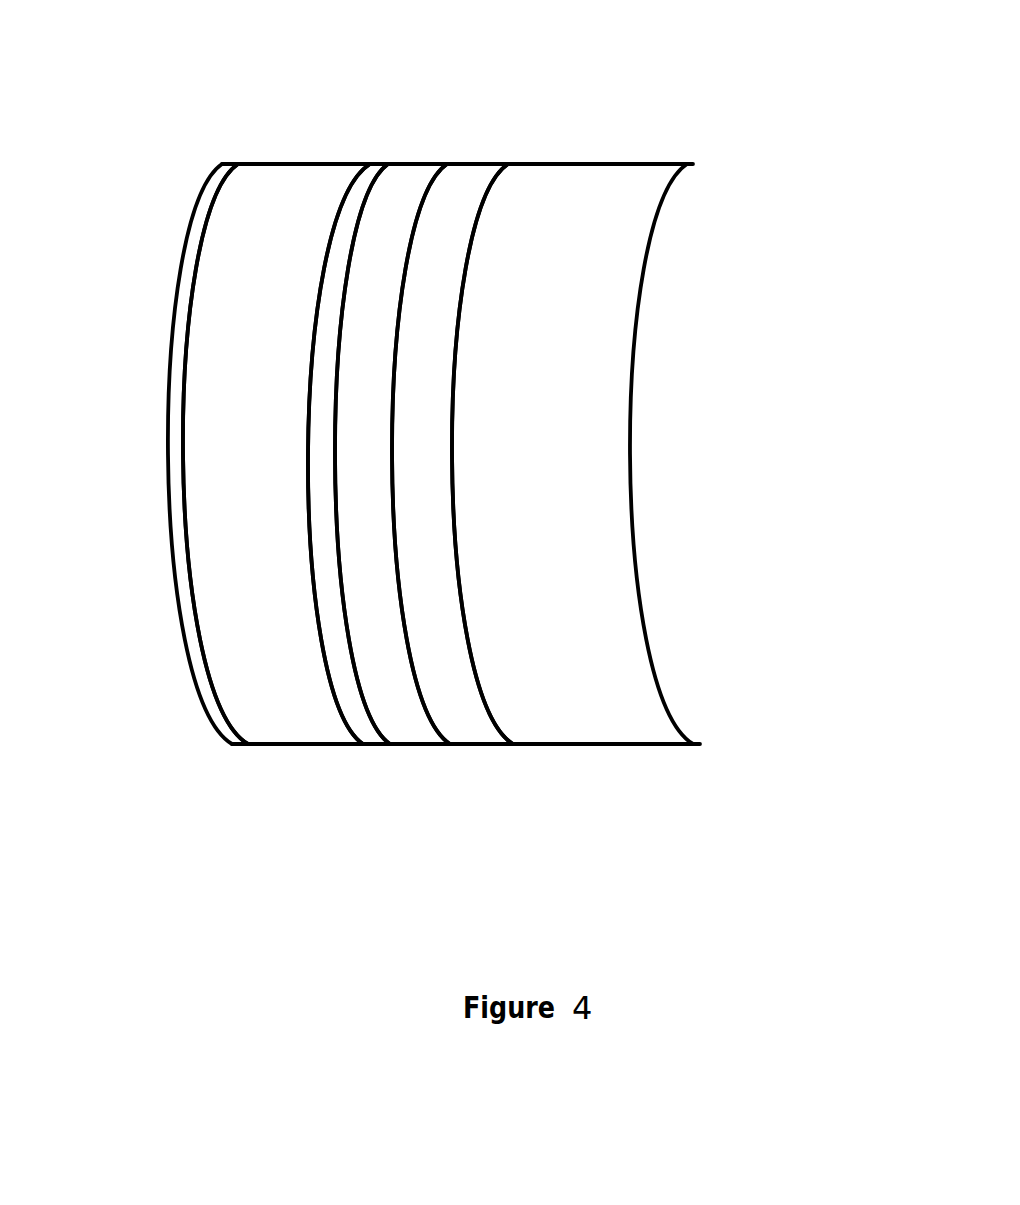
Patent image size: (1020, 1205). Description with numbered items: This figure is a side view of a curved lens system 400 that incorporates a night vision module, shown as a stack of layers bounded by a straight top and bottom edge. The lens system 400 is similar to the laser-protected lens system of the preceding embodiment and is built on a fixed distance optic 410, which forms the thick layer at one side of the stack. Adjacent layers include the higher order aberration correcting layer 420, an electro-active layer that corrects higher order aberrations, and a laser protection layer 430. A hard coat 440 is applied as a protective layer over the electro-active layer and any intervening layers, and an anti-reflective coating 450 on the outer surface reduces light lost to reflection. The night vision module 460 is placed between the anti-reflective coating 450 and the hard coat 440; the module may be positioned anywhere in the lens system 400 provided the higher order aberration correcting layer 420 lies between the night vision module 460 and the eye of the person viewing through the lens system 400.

The lens system 400 is at (779, 96).
The fixed distance optic 410 is at (630, 483).
The higher order aberration correcting layer 420 is at (483, 742).
The laser protection layer 430 is at (413, 163).
The hard coat 440 is at (367, 743).
The anti-reflective coating 450 is at (185, 250).
The night vision module 460 is at (302, 723).